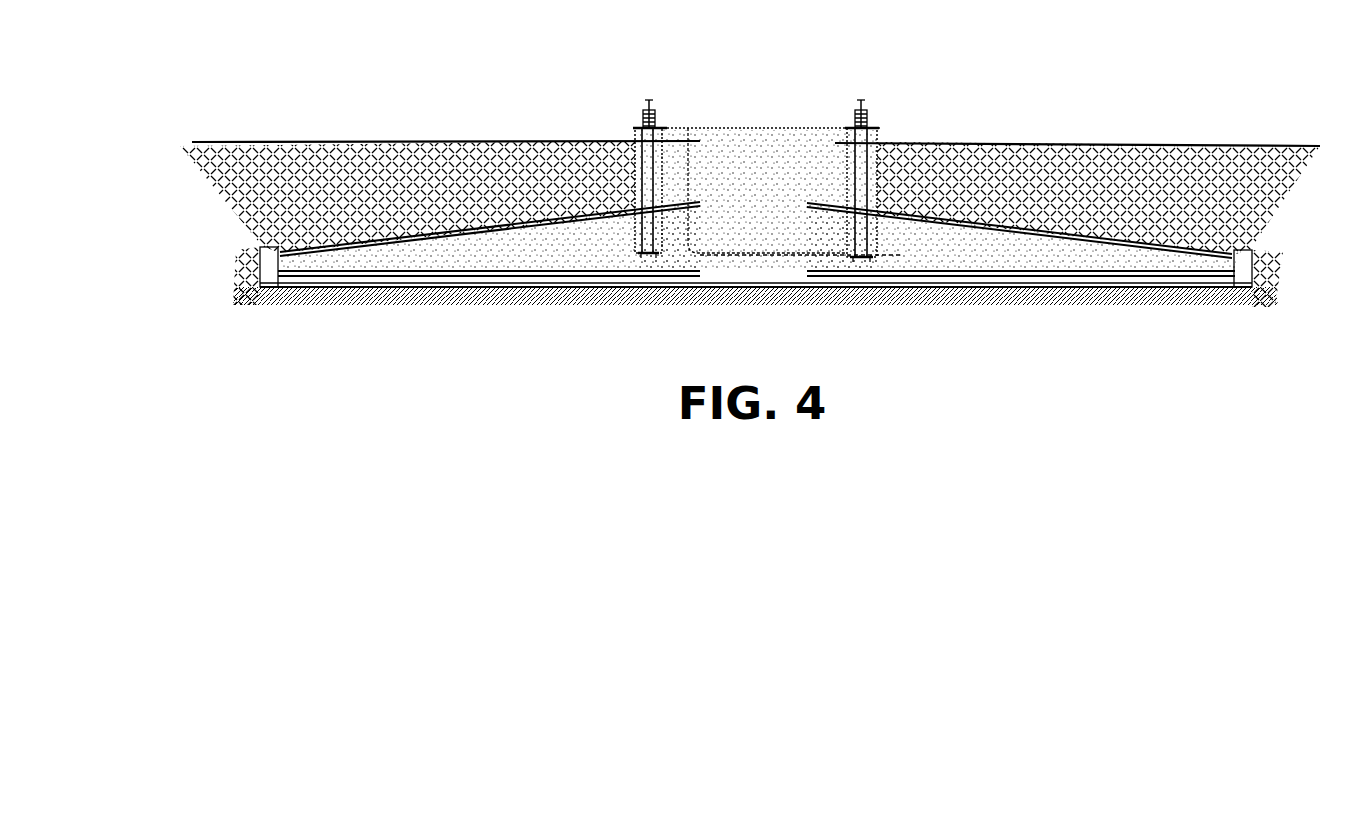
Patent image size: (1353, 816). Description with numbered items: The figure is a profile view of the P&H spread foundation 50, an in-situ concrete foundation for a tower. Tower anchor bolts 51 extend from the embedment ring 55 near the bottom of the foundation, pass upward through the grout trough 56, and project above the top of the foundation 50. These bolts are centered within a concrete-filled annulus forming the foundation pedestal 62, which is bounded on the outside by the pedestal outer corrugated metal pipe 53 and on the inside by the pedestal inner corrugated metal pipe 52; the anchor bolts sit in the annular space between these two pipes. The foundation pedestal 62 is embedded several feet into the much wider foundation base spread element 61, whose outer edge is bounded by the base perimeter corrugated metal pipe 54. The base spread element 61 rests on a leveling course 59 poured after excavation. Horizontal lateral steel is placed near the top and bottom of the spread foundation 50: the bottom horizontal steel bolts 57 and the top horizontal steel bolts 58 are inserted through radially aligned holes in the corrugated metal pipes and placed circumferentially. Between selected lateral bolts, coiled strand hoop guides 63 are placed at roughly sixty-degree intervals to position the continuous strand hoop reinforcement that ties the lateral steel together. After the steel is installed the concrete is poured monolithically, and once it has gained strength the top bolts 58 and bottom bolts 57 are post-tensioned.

The P&H spread foundation 50 is at (1070, 66).
The tower anchor bolts 51 is at (866, 120).
The pedestal inner corrugated metal pipe 52 is at (656, 258).
The pedestal outer corrugated metal pipe 53 is at (633, 175).
The base perimeter corrugated metal pipe 54 is at (288, 245).
The embedment ring 55 is at (880, 265).
The grout trough 56 is at (662, 122).
The bottom horizontal (lateral) steel bolts 57 is at (455, 283).
The top horizontal (lateral) steel bolts 58 is at (503, 215).
The leveling course 59 is at (1195, 288).
The foundation base spread element 61 is at (982, 222).
The foundation pedestal 62 is at (745, 182).
The coiled strand hoop guides 63 is at (362, 235).